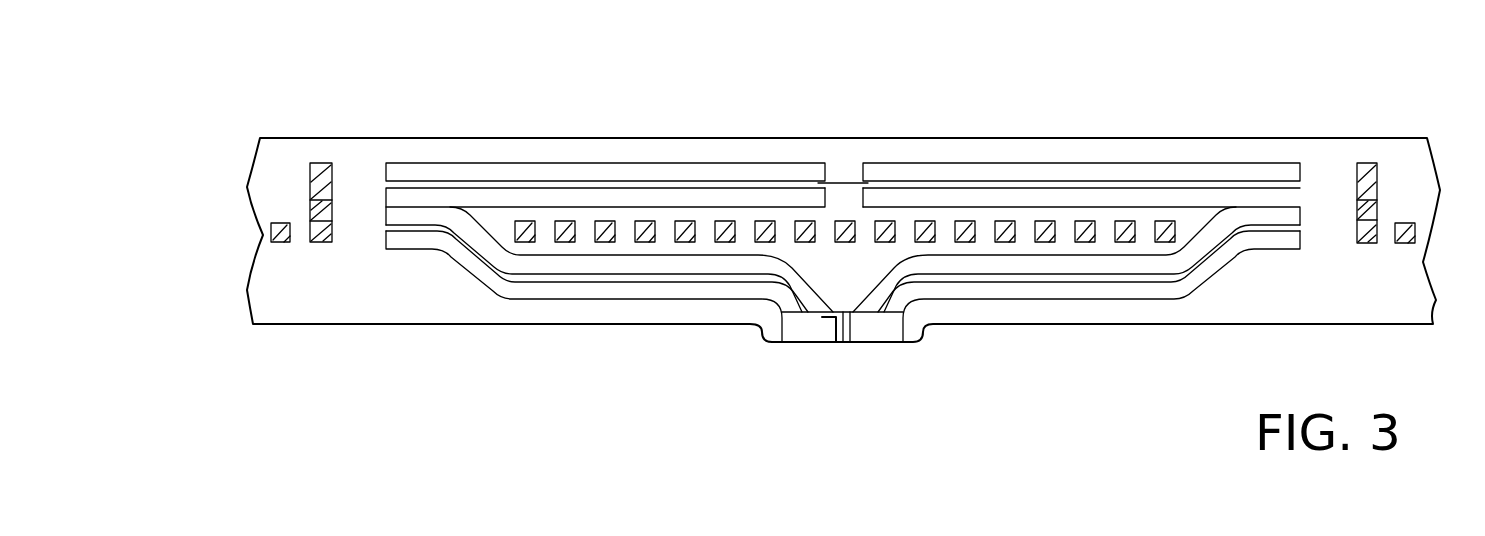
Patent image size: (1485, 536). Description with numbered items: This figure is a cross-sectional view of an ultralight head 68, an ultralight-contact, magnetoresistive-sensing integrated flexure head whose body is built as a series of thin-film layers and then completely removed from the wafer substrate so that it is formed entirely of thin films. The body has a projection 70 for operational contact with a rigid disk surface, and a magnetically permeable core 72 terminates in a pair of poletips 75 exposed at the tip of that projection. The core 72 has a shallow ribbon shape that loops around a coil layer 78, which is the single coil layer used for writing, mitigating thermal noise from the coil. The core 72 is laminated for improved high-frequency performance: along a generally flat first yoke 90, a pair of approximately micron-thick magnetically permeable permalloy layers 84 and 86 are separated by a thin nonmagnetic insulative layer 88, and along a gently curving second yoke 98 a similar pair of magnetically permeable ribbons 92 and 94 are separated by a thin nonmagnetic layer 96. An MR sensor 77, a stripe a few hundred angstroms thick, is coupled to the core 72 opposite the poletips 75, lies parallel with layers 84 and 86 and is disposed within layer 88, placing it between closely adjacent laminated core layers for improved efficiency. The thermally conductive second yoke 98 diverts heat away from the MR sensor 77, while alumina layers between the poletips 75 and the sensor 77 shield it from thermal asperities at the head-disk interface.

The ultralight head 68 is at (333, 81).
The projection 70 is at (757, 333).
The magnetically permeable core 72 is at (1316, 178).
The poletips 75 is at (817, 342).
The MR sensor 77 is at (843, 156).
The coil layer 78 is at (1125, 243).
The magnetically permeable layer 84 is at (1138, 163).
The magnetically permeable layer 86 is at (1217, 188).
The nonmagnetic layer 88 is at (1057, 181).
The first yoke 90 is at (693, 156).
The magnetically permeable ribbon 92 is at (513, 300).
The magnetically permeable ribbon 94 is at (562, 274).
The nonmagnetic layer 96 is at (614, 282).
The second yoke 98 is at (997, 308).